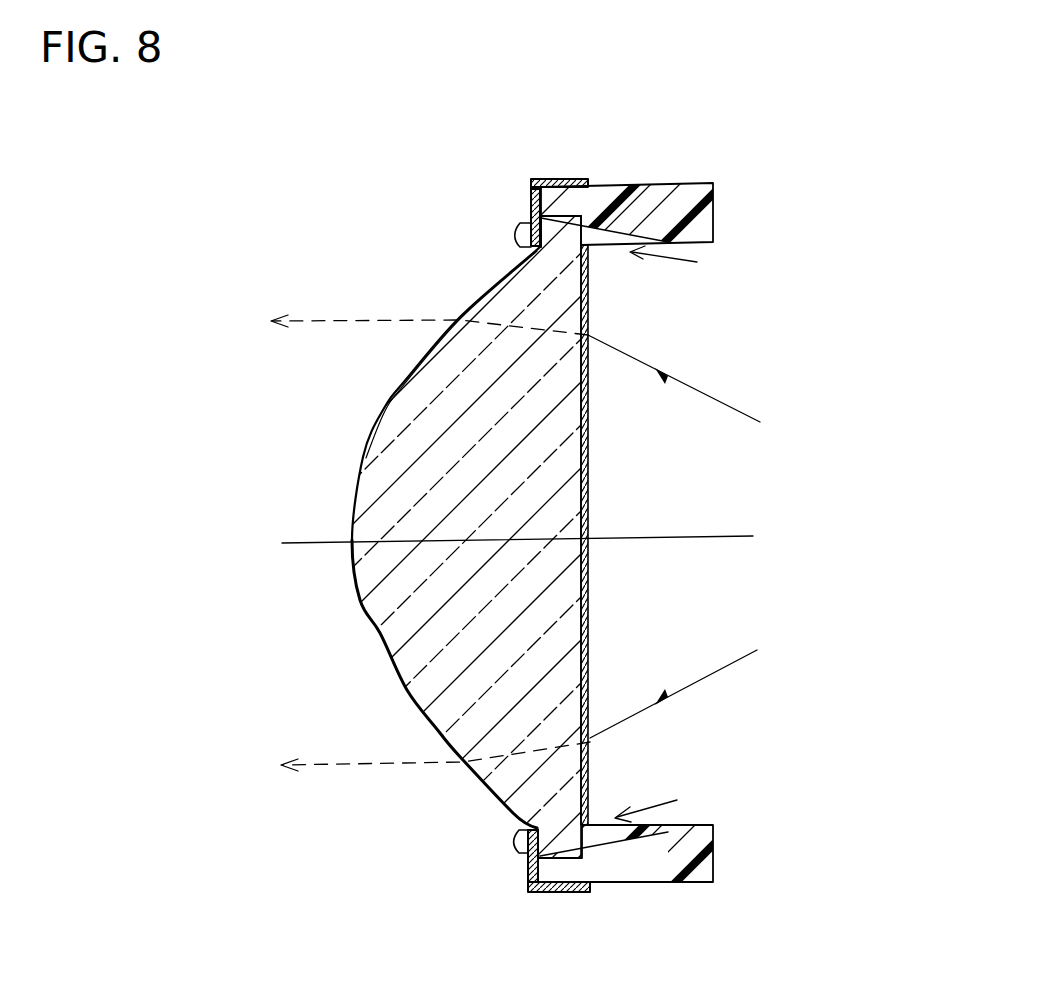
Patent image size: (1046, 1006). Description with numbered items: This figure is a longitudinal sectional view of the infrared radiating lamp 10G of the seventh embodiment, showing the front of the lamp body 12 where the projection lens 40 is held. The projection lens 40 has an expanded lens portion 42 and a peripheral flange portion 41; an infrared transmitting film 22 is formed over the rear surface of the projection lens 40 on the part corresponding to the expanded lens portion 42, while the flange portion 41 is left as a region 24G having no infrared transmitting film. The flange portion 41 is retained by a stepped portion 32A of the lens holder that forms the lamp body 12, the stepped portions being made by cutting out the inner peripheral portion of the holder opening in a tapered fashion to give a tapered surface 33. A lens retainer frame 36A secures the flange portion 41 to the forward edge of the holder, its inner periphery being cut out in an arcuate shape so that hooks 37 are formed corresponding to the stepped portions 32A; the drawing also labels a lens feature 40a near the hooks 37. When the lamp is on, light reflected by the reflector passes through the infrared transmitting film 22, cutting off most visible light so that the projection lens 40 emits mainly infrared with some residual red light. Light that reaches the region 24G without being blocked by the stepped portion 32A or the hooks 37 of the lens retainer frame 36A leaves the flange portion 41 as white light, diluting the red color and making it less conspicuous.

The infrared radiating lamp 10G is at (389, 215).
The projection lens 40 is at (360, 484).
The expanded lens portion 42 is at (380, 410).
The infrared transmitting film 22 is at (588, 467).
The lamp body 12 is at (693, 186).
The region having no infrared transmitting film 24G is at (641, 200).
The tapered surface 33 is at (657, 242).
The lens retainer frame 36A is at (563, 178).
The stepped portion 32A is at (530, 180).
The flange portion 41 is at (562, 858).
The lens projection 40a is at (520, 240).
The hook 37 is at (521, 237).